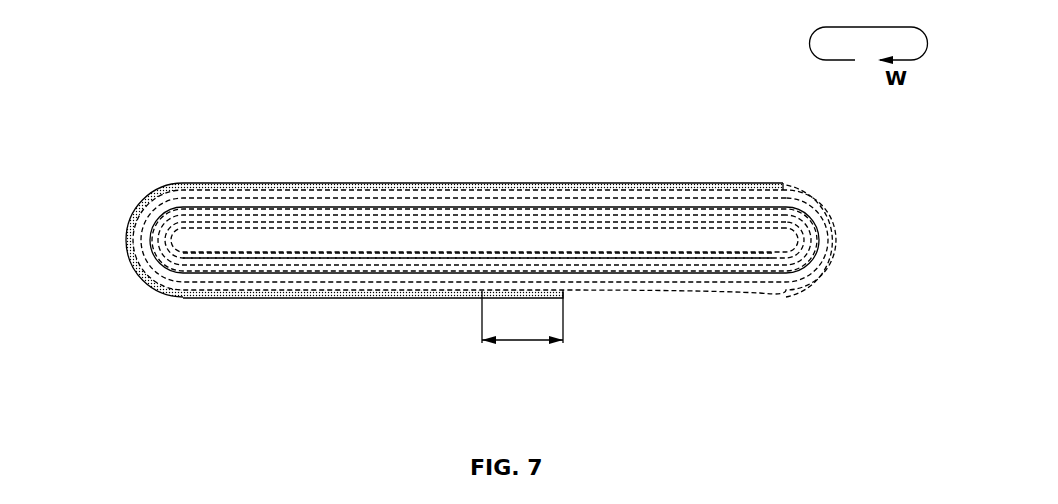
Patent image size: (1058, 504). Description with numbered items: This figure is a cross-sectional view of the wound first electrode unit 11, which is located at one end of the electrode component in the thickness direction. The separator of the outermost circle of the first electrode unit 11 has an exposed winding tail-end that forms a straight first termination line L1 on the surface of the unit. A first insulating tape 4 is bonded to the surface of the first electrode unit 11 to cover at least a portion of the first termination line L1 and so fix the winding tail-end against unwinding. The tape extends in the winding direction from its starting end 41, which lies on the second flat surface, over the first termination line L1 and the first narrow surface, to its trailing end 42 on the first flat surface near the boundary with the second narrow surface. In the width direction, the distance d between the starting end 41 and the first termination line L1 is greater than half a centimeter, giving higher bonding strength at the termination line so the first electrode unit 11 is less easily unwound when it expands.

The first insulating tape 4 is at (128, 184).
The trailing end 42 is at (788, 188).
The starting end 41 is at (563, 292).
The first electrode unit 11 is at (860, 233).
The first termination line L1 is at (482, 291).
The distance d is at (522, 318).